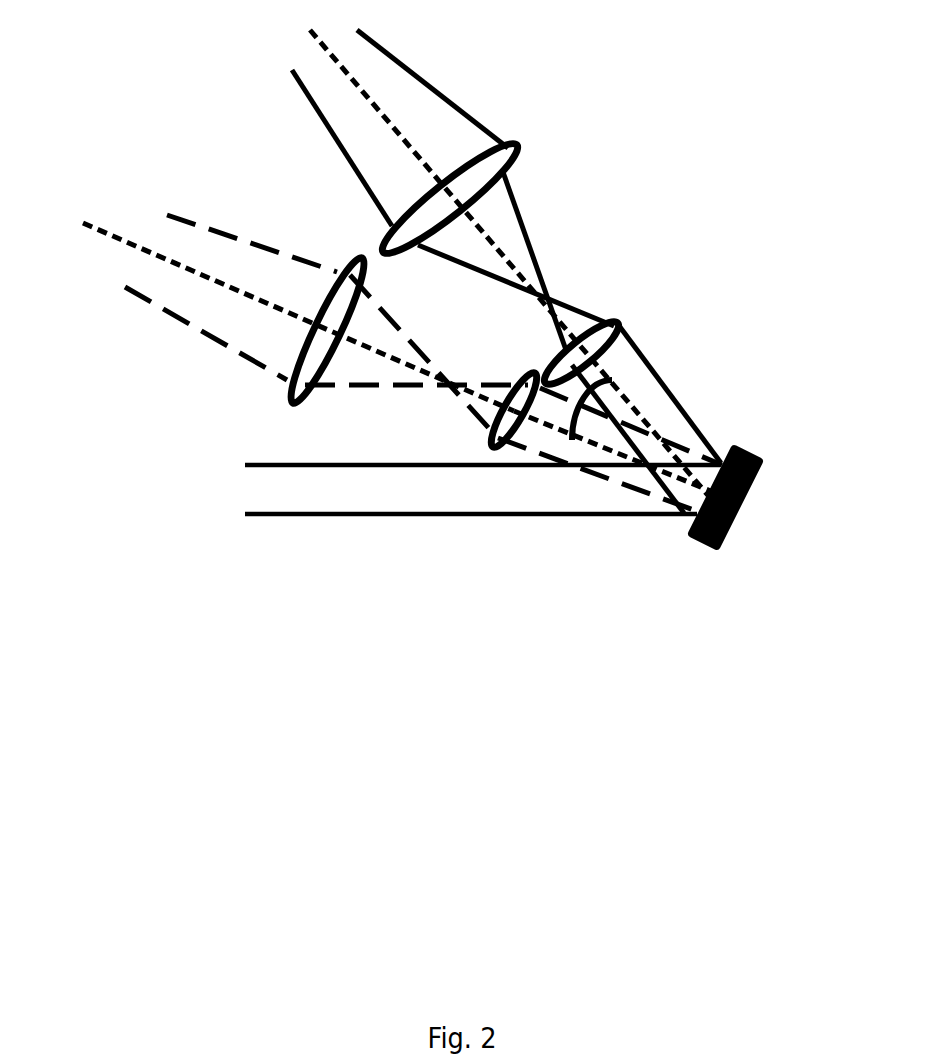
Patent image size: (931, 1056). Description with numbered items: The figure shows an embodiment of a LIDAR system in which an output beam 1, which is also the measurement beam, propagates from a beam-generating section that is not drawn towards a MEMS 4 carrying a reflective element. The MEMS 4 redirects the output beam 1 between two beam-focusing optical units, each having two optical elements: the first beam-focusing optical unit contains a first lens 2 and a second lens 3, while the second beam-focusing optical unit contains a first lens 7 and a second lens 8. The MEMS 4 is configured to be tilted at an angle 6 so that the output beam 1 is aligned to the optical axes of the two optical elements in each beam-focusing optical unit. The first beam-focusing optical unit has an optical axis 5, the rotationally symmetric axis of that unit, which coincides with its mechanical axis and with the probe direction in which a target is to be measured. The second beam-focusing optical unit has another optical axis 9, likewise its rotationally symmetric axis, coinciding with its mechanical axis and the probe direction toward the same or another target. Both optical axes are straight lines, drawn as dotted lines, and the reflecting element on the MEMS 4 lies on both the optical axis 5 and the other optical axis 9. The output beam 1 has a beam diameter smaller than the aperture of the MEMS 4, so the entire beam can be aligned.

The output beam 1 is at (382, 478).
The first lens 2 is at (617, 323).
The second lens 3 is at (517, 158).
The MEMS 4 is at (742, 505).
The optical axis 5 is at (363, 88).
The angle 6 is at (574, 434).
The first lens 7 is at (494, 447).
The second lens 8 is at (290, 388).
The optical axis 9 is at (105, 232).